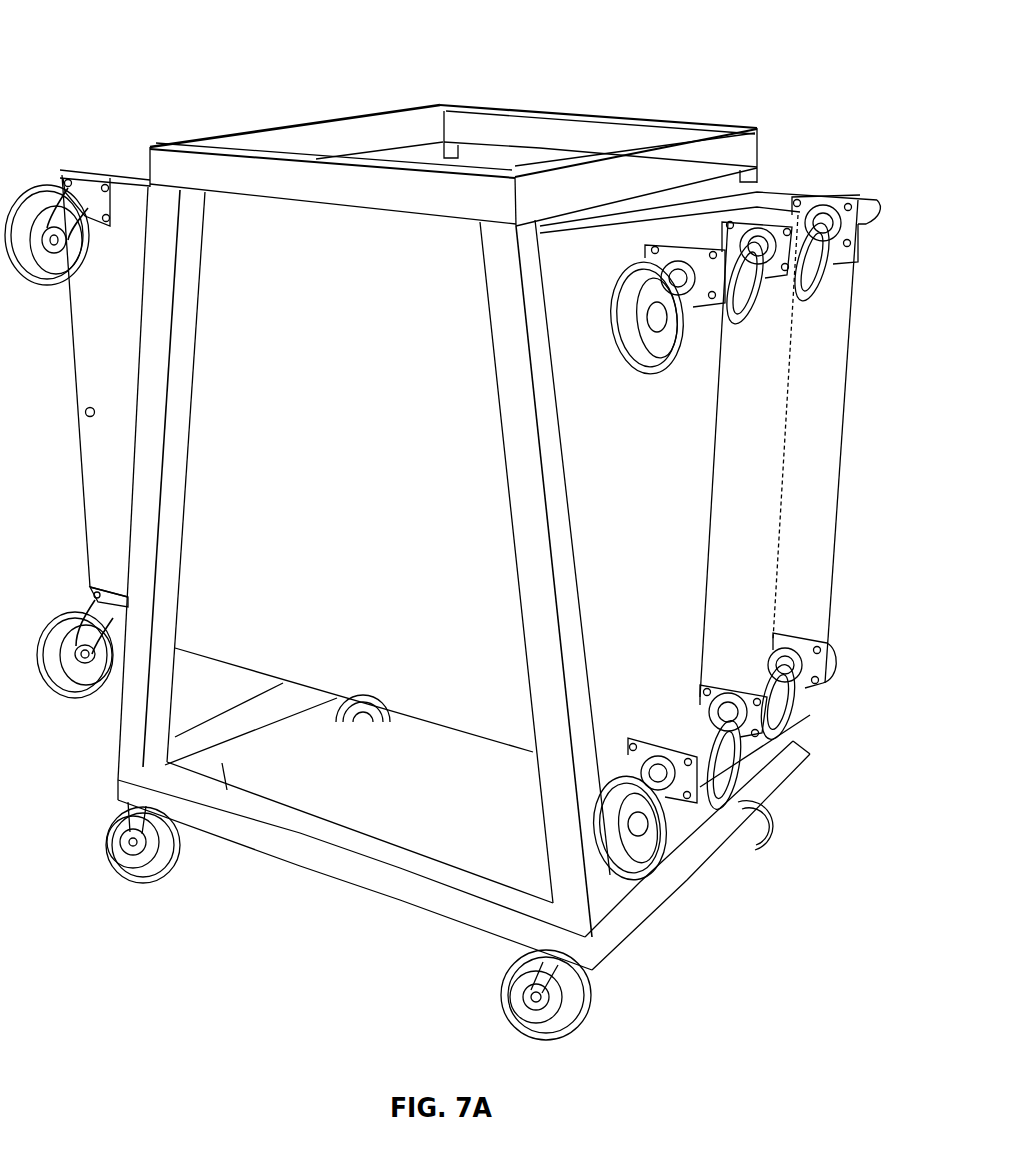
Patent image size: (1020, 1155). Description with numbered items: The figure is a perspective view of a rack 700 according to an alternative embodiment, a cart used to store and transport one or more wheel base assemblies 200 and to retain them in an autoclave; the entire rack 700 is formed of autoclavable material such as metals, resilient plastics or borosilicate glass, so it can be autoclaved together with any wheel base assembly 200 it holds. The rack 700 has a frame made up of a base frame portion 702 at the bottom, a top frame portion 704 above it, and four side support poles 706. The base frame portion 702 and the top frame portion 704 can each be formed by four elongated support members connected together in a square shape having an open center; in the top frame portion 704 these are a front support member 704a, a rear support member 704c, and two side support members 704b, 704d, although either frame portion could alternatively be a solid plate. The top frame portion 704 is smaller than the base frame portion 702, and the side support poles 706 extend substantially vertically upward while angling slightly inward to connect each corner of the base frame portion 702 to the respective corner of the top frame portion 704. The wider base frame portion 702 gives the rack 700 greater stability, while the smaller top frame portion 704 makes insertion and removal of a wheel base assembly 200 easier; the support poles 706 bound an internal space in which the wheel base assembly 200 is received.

The rack 700 is at (106, 56).
The top frame portion 704 is at (786, 140).
The front support member 704a is at (725, 157).
The side support member 704b is at (325, 203).
The rear support member 704c is at (345, 120).
The side support member 704d is at (495, 113).
The side support poles 706 is at (503, 437).
The base frame portion 702 is at (687, 877).
The wheel base assembly 200 is at (842, 493).